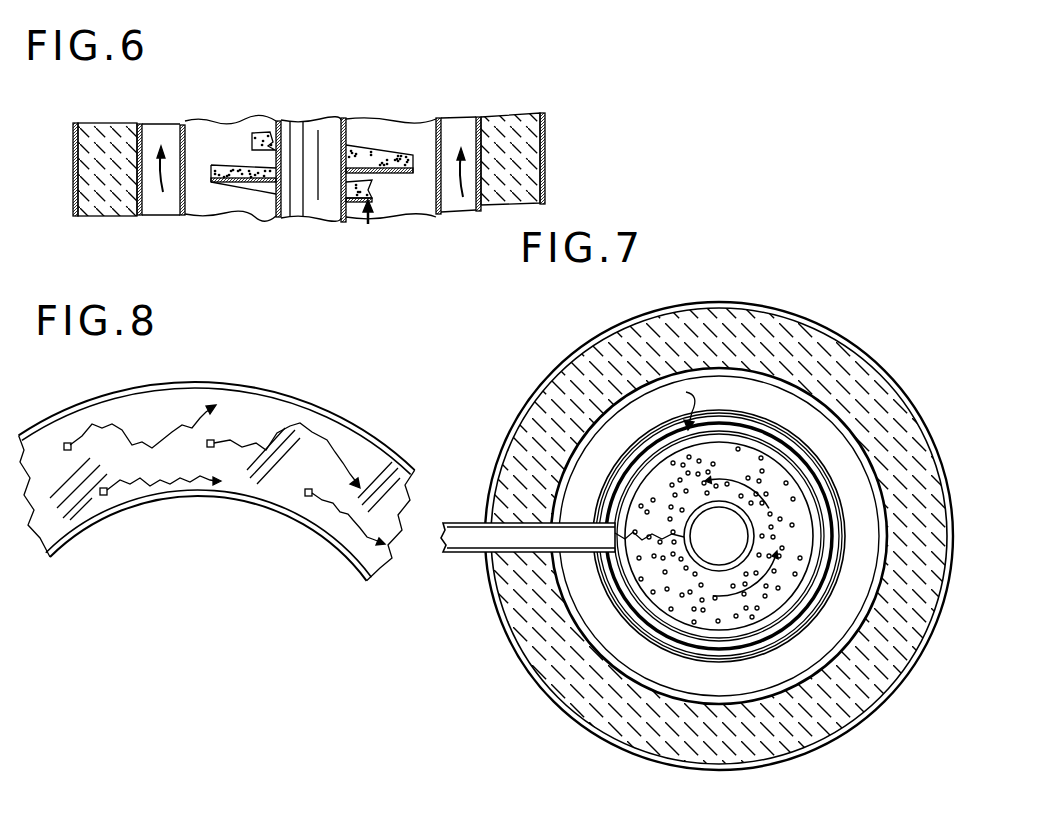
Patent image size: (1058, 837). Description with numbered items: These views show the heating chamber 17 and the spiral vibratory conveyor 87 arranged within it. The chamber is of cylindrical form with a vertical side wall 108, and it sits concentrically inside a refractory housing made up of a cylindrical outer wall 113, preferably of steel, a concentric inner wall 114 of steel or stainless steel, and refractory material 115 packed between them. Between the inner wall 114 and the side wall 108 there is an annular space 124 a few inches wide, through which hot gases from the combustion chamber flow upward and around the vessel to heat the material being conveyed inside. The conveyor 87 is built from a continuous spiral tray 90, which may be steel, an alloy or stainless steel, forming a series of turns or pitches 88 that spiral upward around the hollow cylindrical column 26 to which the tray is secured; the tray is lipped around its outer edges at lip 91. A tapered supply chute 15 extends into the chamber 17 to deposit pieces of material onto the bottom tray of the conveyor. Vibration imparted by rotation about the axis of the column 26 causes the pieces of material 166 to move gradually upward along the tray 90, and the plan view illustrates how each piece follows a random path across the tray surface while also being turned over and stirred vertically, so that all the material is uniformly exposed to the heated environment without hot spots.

In FIG. 7, the supply chute 15 is at (462, 522).
In FIG. 6, the heating chamber 17 is at (548, 160).
In FIG. 7, the heating chamber 17 is at (886, 700).
In FIG. 8, the column 26 is at (202, 505).
In FIG. 6, the spiral vibratory conveyor 87 is at (368, 222).
In FIG. 7, the spiral vibratory conveyor 87 is at (673, 402).
In FIG. 6, the turns or pitches 88 is at (240, 190).
In FIG. 7, the turns or pitches 88 is at (803, 478).
In FIG. 6, the spiral tray 90 is at (395, 173).
In FIG. 7, the spiral tray 90 is at (668, 628).
In FIG. 8, the spiral tray 90 is at (387, 457).
In FIG. 7, the lip 91 is at (838, 528).
In FIG. 8, the lip 91 is at (355, 432).
In FIG. 6, the side wall 108 is at (188, 205).
In FIG. 7, the side wall 108 is at (585, 415).
In FIG. 6, the outer wall 113 is at (70, 168).
In FIG. 7, the outer wall 113 is at (825, 320).
In FIG. 6, the inner wall 114 is at (148, 205).
In FIG. 7, the inner wall 114 is at (705, 360).
In FIG. 6, the refractory material 115 is at (112, 145).
In FIG. 7, the refractory material 115 is at (760, 325).
In FIG. 6, the annular space 124 is at (162, 138).
In FIG. 7, the annular space 124 is at (580, 595).
In FIG. 6, the pieces of material 166 is at (233, 167).
In FIG. 7, the pieces of material 166 is at (695, 462).
In FIG. 8, the pieces of material 166 is at (67, 442).